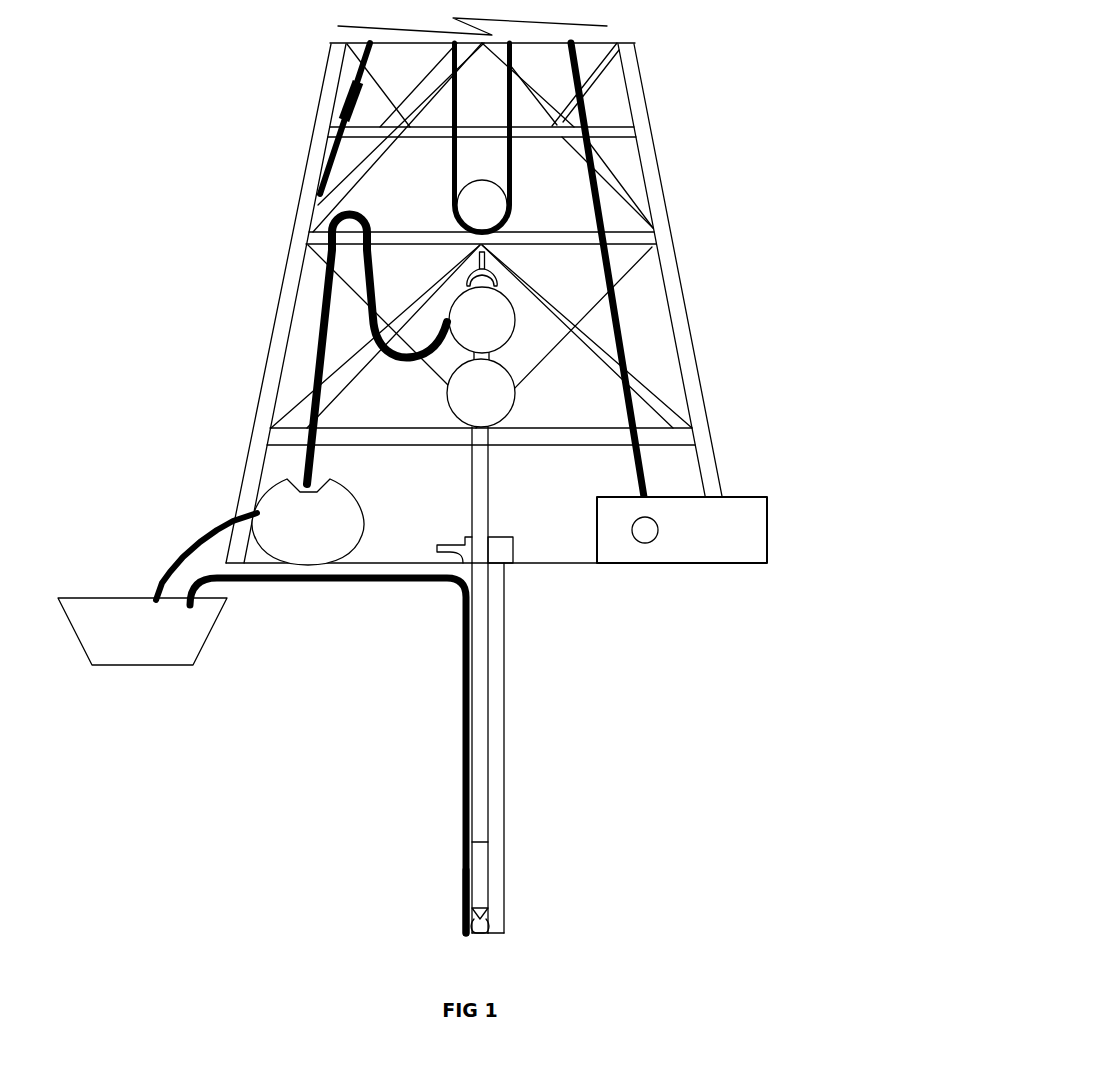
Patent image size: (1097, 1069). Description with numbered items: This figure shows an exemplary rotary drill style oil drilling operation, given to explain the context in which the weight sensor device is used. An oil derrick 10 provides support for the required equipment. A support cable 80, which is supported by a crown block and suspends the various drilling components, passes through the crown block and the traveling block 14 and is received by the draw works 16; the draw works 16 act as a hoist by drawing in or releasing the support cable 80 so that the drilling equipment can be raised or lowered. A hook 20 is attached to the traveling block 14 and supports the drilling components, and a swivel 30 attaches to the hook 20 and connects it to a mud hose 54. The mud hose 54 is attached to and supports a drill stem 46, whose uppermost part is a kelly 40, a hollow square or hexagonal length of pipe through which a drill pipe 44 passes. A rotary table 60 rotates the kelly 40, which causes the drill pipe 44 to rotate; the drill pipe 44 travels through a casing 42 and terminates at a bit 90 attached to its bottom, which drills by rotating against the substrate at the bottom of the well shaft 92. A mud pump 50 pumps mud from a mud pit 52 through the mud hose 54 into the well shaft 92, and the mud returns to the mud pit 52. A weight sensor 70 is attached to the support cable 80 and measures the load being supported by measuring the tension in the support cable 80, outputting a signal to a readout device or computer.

The oil derrick 10 is at (637, 79).
The traveling block 14 is at (482, 205).
The draw works 16 is at (658, 530).
The hook 20 is at (486, 265).
The swivel 30 is at (485, 320).
The kelly 40 is at (483, 465).
The casing 42 is at (462, 720).
The drill pipe 44 is at (488, 815).
The drill stem 46 is at (497, 490).
The mud pump 50 is at (288, 510).
The mud pit 52 is at (125, 632).
The mud hose 54 is at (322, 294).
The rotary table 60 is at (463, 550).
The weight sensor 70 is at (338, 108).
The support cable 80 is at (597, 185).
The bit 90 is at (490, 923).
The well shaft 92 is at (462, 877).